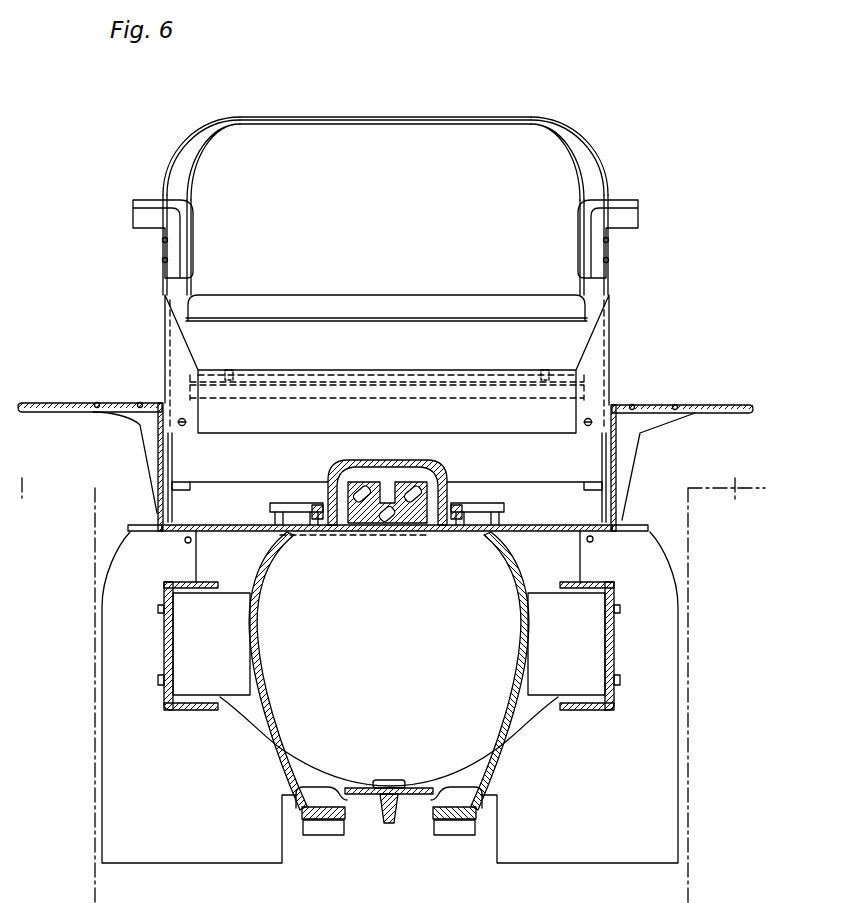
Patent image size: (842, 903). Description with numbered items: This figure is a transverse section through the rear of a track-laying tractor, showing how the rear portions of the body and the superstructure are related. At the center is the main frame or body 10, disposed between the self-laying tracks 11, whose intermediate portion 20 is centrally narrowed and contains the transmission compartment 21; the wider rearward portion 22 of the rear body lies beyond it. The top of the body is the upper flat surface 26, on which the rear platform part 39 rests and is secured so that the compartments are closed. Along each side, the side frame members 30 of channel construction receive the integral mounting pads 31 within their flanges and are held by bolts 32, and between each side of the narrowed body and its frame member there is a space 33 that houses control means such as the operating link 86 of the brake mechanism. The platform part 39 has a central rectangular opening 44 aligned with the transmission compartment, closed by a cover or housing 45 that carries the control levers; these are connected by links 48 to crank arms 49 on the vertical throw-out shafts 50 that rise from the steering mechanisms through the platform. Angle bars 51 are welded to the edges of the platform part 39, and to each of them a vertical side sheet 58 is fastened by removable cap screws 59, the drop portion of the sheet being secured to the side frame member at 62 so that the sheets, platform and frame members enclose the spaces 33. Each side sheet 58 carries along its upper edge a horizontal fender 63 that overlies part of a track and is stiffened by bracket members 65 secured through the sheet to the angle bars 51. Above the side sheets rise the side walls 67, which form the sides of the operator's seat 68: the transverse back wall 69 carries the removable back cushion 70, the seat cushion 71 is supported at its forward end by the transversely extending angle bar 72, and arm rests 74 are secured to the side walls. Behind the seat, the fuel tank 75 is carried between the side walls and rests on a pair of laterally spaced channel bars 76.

The main frame or body 10 is at (384, 828).
The self-laying tracks 11 is at (391, 679).
The intermediate portion of the rear body part 20 is at (500, 771).
The transmission compartment 21 is at (389, 671).
The rearward portion of the rear body 22 is at (665, 783).
The upper flat surface 26 is at (650, 526).
The side frame members 30 is at (175, 638).
The mounting pads 31 is at (221, 688).
The bolts 32 is at (158, 680).
The space 33 is at (218, 562).
The rear platform part 39 is at (305, 532).
The rectangular opening 44 is at (428, 536).
The cover or housing 45 is at (446, 479).
The links 48 is at (321, 504).
The crank arms 49 is at (290, 504).
The vertical throw-out shafts 50 is at (299, 532).
The angle bars 51 is at (160, 532).
The side sheet 58 is at (172, 456).
The cap screws 59 is at (160, 512).
The securing point at side frame member 62 is at (163, 593).
The fender 63 is at (90, 403).
The bracket members 65 is at (140, 436).
The side walls 67 is at (168, 328).
The operator's seat 68 is at (385, 242).
The transverse back wall 69 is at (272, 118).
The back cushion 70 is at (378, 118).
The seat cushion 71 is at (333, 295).
The transversely extending angle bar 72 is at (333, 382).
The arm rests 74 is at (142, 200).
The fuel tank 75 is at (387, 481).
The channel bars 76 is at (215, 491).
The operating link 86 is at (192, 542).